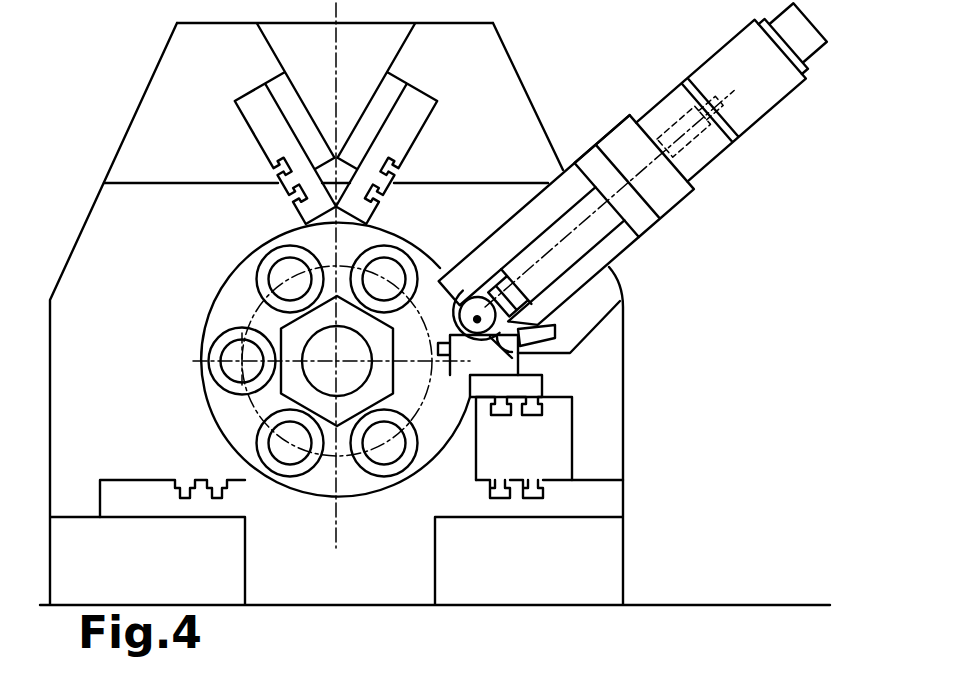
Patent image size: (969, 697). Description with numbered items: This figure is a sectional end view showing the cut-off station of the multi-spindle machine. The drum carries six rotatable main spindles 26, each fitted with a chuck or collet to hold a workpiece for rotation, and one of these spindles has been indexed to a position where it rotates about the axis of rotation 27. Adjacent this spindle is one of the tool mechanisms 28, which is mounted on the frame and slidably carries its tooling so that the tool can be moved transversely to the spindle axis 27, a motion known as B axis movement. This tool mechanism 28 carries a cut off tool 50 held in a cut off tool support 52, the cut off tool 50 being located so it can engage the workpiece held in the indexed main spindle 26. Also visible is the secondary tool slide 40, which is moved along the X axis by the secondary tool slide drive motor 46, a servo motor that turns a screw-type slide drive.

The main spindle 26 is at (397, 241).
The axis of rotation 27 is at (473, 395).
The tool mechanism 28 is at (597, 480).
The secondary tool slide 40 is at (679, 204).
The secondary tool slide drive motor 46 is at (716, 44).
The cut off tool 50 is at (432, 268).
The cut off tool support 52 is at (545, 384).